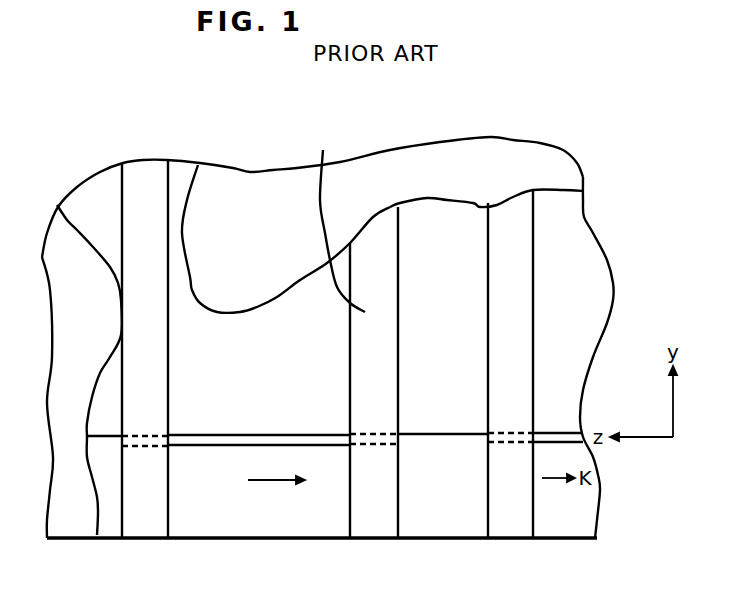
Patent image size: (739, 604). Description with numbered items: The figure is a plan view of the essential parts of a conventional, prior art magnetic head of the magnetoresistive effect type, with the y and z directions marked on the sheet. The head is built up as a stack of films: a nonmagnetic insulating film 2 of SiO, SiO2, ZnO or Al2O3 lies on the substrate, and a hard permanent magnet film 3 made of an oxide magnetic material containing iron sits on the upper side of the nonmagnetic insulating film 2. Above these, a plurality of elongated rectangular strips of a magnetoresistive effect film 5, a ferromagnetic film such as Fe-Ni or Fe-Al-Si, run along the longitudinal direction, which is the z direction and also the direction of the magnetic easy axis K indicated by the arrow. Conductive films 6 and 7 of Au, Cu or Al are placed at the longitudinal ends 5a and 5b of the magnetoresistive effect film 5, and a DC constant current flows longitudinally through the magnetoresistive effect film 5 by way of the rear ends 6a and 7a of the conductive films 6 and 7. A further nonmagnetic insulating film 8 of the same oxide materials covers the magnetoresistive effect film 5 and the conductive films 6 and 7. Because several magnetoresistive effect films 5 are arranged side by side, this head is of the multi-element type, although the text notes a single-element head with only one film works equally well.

The nonmagnetic insulating film 2 is at (437, 210).
The permanent magnet film 3 is at (108, 523).
The magnetoresistive effect film 5 is at (270, 527).
The longitudinal end 5a is at (152, 527).
The longitudinal end 5b is at (375, 525).
The conductive film 6 is at (128, 225).
The rear end 6a is at (150, 171).
The conductive film 7 is at (342, 220).
The rear end 7a is at (375, 223).
The nonmagnetic insulating film 8 is at (295, 182).